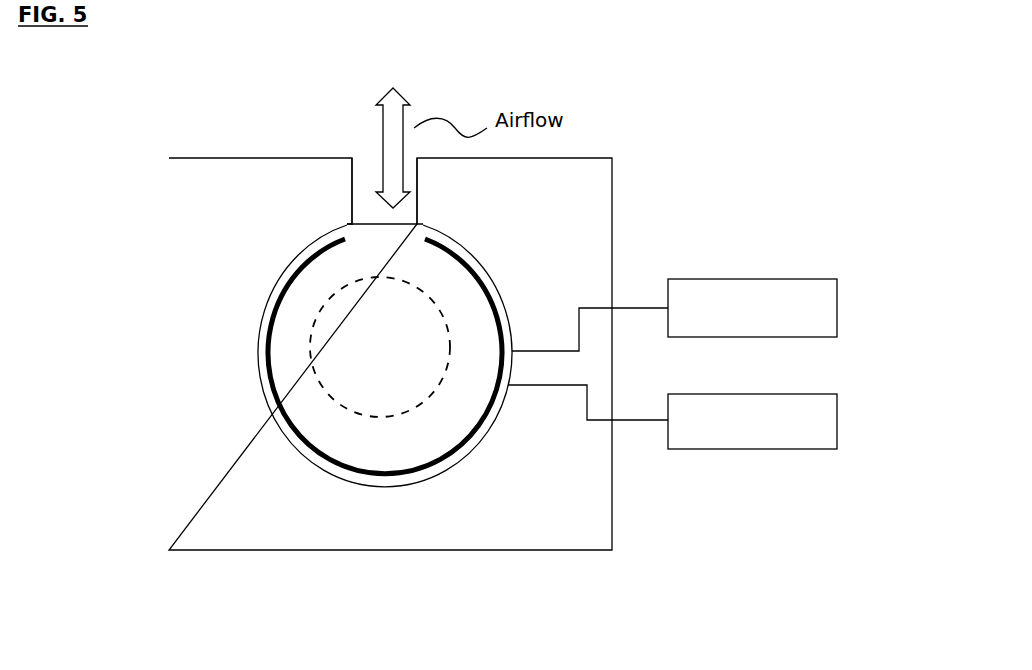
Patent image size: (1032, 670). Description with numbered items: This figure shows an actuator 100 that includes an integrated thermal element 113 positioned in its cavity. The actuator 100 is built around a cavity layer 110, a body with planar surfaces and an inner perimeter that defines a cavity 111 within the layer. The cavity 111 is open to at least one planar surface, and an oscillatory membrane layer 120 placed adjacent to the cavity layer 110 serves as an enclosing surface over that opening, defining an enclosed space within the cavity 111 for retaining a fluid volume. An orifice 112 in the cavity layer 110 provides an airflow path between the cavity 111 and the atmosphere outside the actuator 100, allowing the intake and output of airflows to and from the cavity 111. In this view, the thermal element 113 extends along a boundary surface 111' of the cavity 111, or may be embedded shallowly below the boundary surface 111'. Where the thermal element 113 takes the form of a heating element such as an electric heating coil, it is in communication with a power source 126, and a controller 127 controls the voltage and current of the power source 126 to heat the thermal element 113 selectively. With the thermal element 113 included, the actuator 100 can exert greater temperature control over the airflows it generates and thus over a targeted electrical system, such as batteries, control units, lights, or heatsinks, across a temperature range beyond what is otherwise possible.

The actuator 100 is at (748, 107).
The cavity layer 110 is at (237, 470).
The cavity 111 is at (348, 356).
The boundary surface 111' is at (291, 535).
The orifice 112 is at (368, 195).
The thermal element 113 is at (263, 378).
The oscillatory membrane layer 120 is at (432, 298).
The power source 126 is at (765, 449).
The controller 127 is at (772, 279).